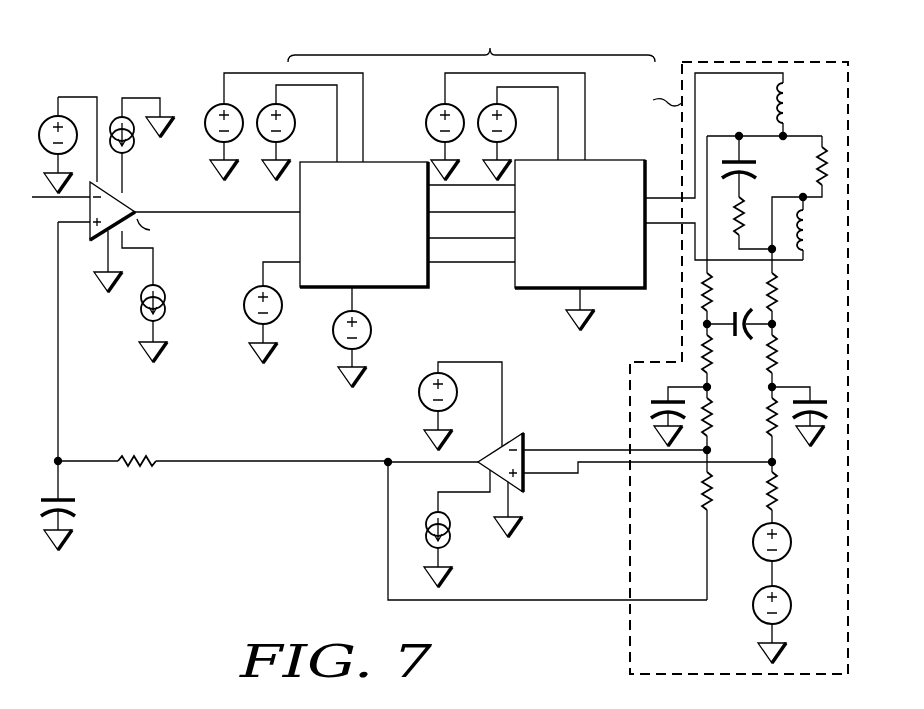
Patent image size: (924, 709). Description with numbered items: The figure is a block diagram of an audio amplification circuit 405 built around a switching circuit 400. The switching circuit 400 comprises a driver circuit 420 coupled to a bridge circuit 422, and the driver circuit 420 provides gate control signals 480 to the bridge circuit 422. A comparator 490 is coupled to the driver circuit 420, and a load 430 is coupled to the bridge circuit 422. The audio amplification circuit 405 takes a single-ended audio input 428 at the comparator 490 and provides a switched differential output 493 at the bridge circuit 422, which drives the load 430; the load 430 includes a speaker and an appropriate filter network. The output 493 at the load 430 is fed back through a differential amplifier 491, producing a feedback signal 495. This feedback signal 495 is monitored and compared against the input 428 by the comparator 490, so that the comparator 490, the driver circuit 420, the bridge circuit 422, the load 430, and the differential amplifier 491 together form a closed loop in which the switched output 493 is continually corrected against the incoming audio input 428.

The switching circuit 400 is at (430, 102).
The audio amplification circuit 405 is at (278, 598).
The driver circuit 420 is at (374, 272).
The bridge circuit 422 is at (590, 274).
The single-ended audio input 428 is at (43, 200).
The load 430 is at (728, 368).
The gate control signals 480 is at (482, 272).
The comparator 490 is at (129, 203).
The differential amplifier 491 is at (401, 441).
The switched differential output 493 is at (665, 247).
The feedback signal 495 is at (100, 444).